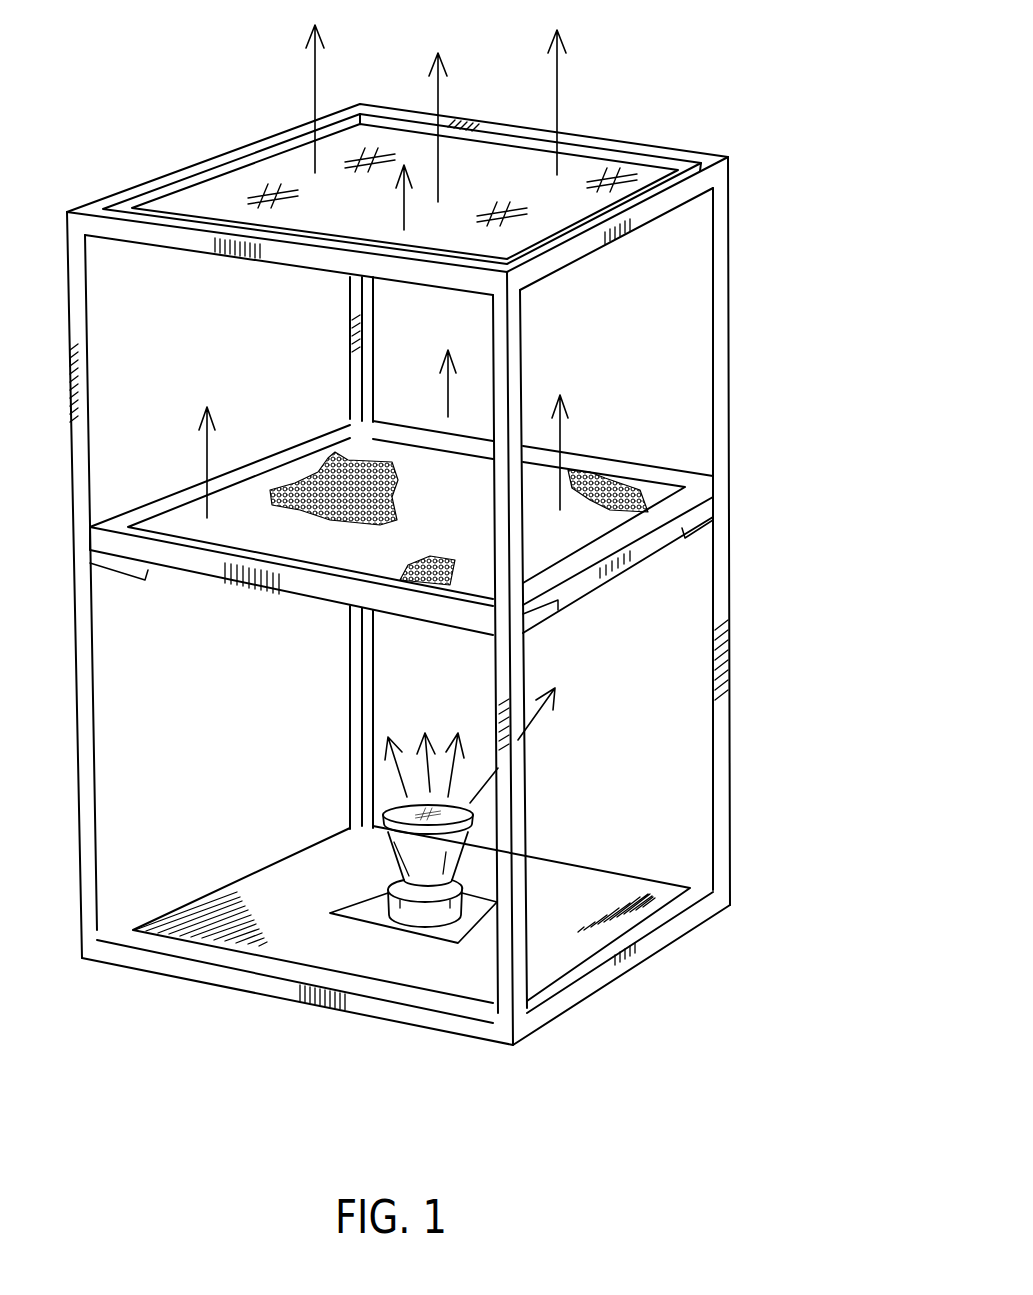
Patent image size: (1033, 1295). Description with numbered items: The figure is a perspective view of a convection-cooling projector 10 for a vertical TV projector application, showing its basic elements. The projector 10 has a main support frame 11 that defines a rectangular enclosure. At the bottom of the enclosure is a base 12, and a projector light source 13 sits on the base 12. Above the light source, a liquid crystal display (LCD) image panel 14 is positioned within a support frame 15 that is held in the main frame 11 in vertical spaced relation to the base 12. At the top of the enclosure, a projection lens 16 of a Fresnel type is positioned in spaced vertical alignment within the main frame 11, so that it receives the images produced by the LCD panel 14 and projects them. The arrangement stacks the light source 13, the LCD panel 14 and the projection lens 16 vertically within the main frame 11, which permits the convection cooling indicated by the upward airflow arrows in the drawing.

The convection-cooling projector 10 is at (675, 58).
The main support frame 11 is at (722, 340).
The base 12 is at (560, 962).
The projector light source 13 is at (376, 863).
The liquid crystal display (LCD) image panel 14 is at (542, 480).
The support frame 15 is at (661, 537).
The projection lens 16 is at (592, 168).